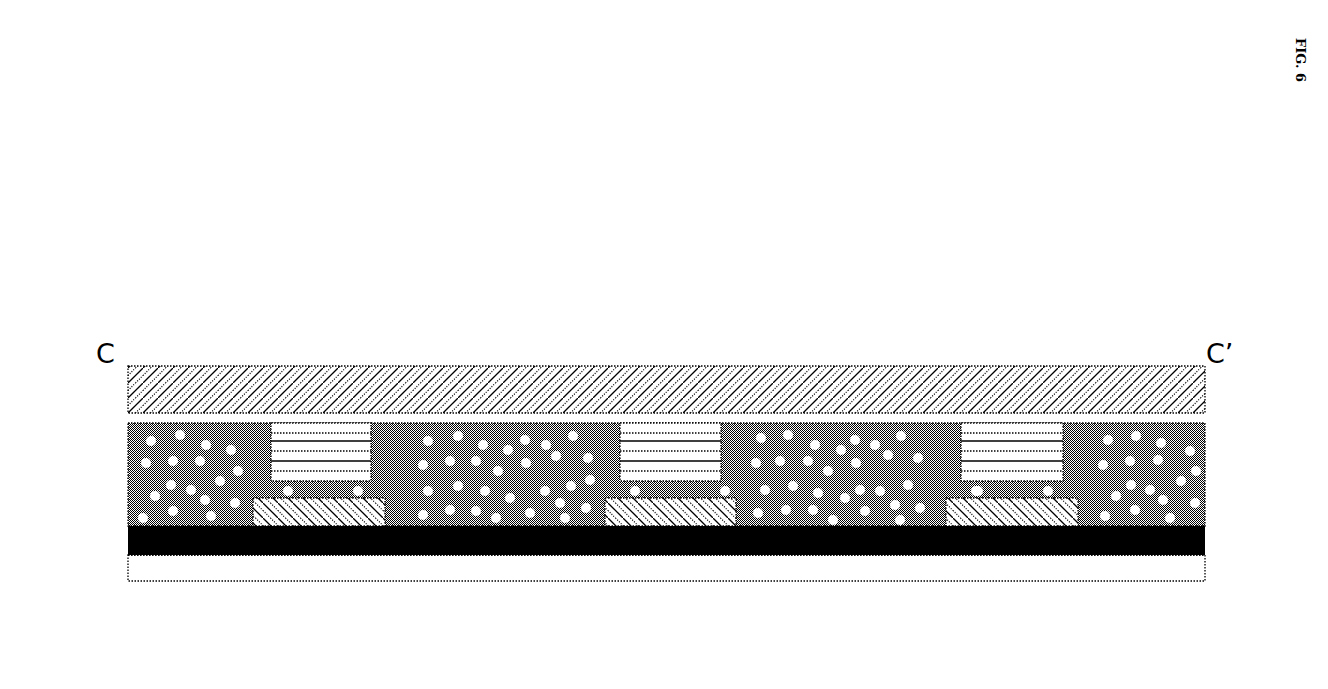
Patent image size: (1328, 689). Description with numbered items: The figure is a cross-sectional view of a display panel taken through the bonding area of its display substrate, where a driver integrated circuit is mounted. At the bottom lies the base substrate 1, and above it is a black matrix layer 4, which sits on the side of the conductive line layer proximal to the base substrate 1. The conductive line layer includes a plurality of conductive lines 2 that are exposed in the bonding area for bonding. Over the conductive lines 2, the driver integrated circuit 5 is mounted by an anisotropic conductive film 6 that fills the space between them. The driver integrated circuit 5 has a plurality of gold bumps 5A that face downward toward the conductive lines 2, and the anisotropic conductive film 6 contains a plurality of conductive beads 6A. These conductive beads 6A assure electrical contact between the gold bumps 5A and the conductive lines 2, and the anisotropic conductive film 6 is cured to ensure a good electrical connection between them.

The base substrate 1 is at (666, 568).
The conductive lines 2 is at (665, 513).
The black matrix layer 4 is at (666, 540).
The driver integrated circuit 5 is at (657, 380).
The gold bumps 5A is at (294, 450).
The anisotropic conductive film 6 is at (666, 474).
The conductive beads 6A is at (453, 547).